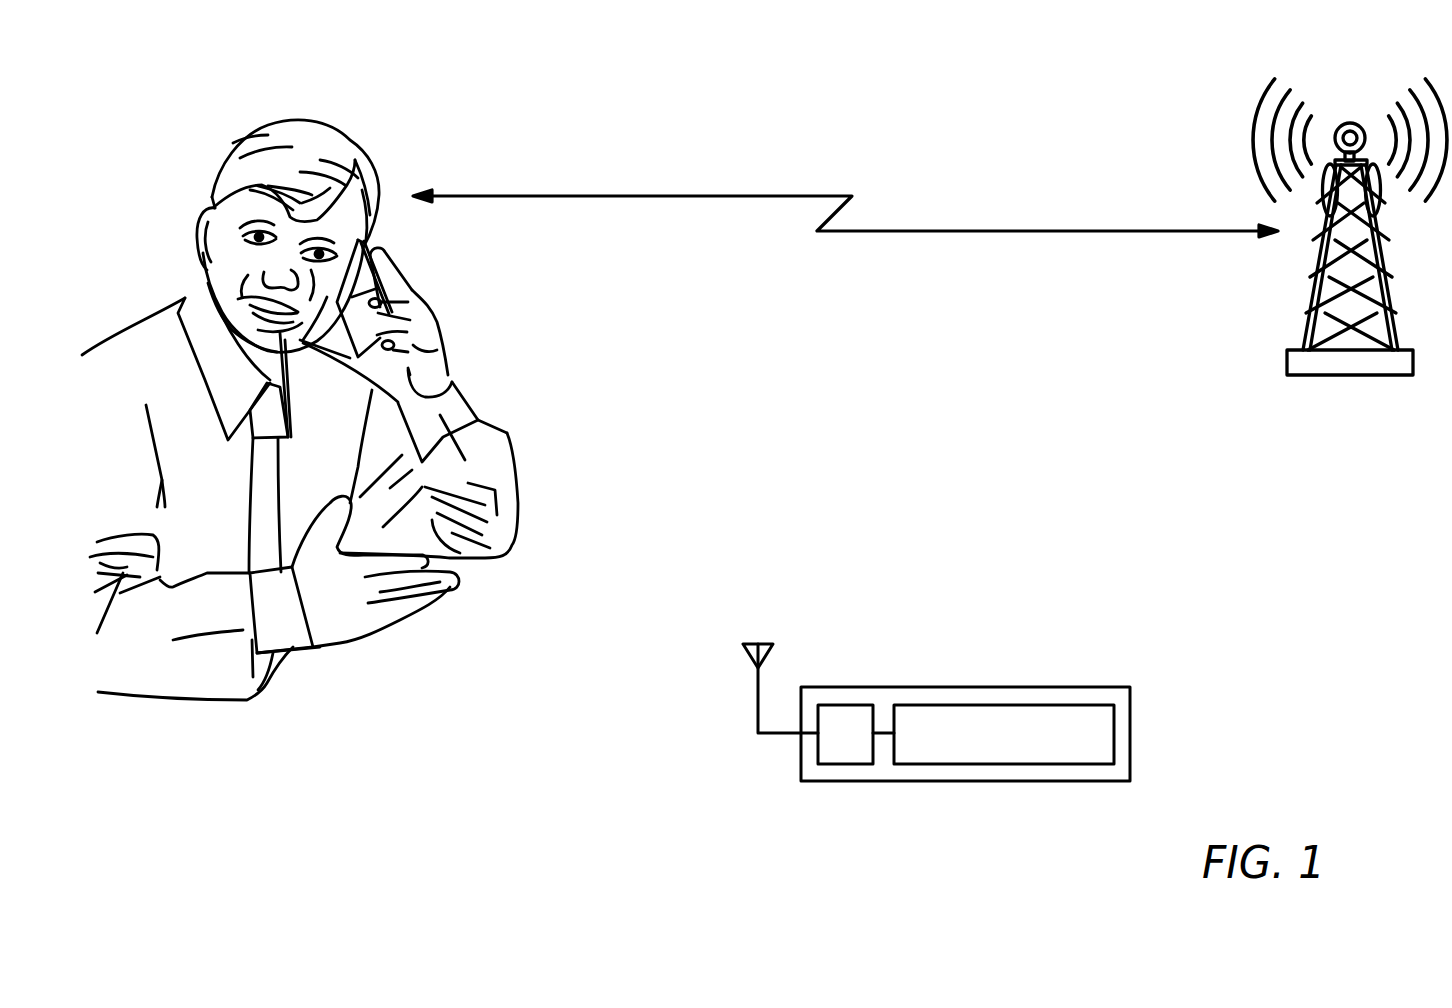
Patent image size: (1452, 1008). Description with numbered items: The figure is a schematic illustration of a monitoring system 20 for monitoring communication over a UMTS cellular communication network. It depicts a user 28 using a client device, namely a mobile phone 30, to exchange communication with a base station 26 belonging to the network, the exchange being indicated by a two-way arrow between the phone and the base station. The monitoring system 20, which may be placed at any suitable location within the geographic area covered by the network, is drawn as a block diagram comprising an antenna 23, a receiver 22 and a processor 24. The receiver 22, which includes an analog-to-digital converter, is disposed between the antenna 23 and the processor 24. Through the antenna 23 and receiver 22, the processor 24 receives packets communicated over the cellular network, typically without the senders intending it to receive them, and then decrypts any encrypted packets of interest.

The monitoring system 20 is at (1104, 603).
The receiver 22 is at (848, 705).
The antenna 23 is at (768, 640).
The processor 24 is at (1010, 705).
The base station 26 is at (1352, 123).
The user 28 is at (220, 147).
The mobile phone 30 is at (397, 278).